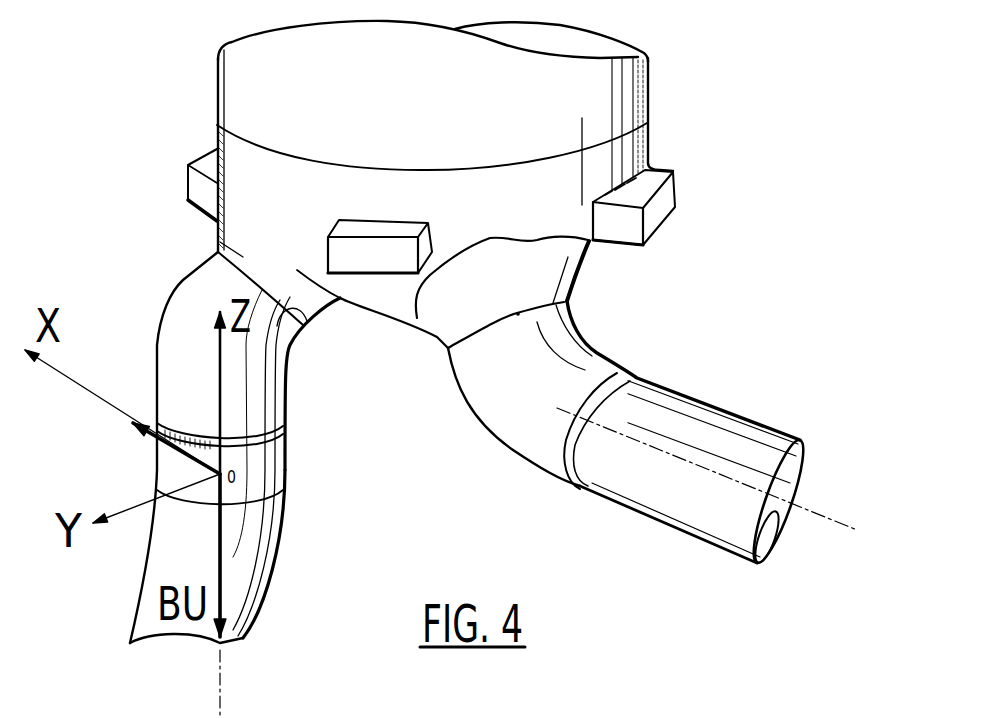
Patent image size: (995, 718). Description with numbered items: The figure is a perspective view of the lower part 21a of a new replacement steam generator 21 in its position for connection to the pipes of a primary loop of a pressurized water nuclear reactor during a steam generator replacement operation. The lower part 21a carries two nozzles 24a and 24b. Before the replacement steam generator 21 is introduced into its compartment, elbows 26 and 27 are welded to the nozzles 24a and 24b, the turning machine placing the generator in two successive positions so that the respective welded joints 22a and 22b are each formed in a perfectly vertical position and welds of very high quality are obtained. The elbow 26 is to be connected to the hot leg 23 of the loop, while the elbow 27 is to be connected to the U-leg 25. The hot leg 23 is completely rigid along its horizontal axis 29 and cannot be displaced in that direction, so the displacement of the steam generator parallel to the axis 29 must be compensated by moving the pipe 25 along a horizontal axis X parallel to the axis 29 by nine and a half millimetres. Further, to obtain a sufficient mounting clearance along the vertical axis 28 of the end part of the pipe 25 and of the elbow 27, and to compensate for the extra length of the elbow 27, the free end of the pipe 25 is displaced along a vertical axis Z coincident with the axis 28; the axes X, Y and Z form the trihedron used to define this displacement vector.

The replacement steam generator 21 is at (657, 67).
The lower part of the replacement steam generator 21a is at (617, 163).
The welded joint 22a is at (549, 309).
The welded joint 22b is at (294, 340).
The hot leg 23 is at (697, 437).
The nozzle 24a is at (577, 285).
The nozzle 24b is at (217, 238).
The U-leg 25 is at (267, 528).
The elbow 26 is at (607, 343).
The elbow 27 is at (187, 323).
The vertical axis 28 is at (220, 695).
The horizontal axis 29 is at (800, 507).